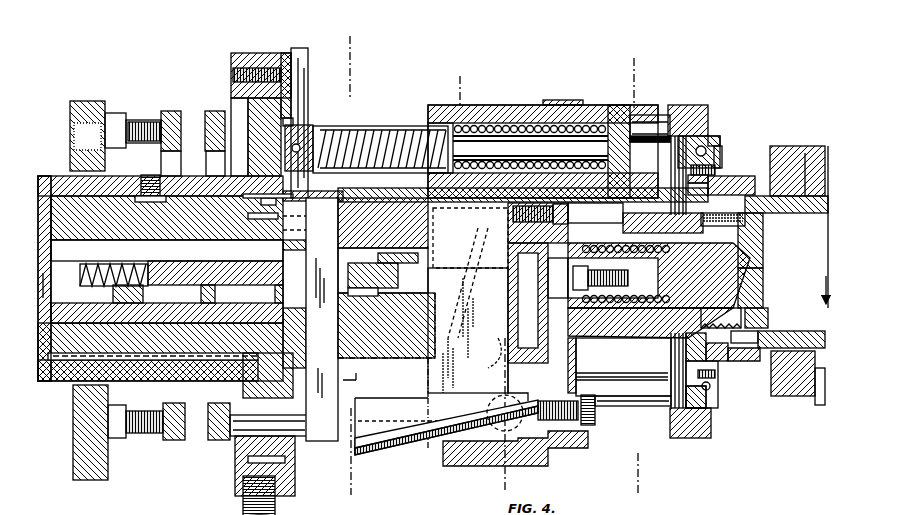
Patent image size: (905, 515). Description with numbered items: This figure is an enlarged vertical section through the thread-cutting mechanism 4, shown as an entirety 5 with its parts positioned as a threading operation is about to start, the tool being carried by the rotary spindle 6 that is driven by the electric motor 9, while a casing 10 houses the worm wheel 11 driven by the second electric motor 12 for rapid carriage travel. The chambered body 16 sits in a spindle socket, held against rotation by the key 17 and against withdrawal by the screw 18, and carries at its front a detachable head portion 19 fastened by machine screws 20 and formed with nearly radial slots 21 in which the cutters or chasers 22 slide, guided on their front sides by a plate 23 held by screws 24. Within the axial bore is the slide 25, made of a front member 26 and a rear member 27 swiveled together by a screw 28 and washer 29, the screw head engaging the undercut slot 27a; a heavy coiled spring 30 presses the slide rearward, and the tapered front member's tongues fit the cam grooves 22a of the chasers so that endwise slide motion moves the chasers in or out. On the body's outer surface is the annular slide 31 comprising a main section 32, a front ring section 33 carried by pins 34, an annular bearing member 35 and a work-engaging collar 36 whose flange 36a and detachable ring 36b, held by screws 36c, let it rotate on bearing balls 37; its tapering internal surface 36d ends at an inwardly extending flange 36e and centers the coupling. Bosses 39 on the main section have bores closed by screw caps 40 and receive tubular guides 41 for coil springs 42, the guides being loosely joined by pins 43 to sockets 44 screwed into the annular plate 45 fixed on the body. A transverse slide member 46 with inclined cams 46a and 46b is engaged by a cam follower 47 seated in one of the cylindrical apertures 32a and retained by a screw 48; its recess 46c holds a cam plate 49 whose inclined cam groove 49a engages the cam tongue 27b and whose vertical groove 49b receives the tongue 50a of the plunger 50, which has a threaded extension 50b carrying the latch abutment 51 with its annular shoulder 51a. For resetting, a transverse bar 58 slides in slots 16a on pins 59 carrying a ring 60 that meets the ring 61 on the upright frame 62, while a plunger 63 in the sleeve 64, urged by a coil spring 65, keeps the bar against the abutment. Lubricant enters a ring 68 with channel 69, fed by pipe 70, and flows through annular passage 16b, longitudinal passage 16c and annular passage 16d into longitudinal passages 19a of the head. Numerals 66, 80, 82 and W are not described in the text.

The thread-cutting mechanism 4 is at (638, 460).
The section line 5 is at (432, 298).
The rotary spindle 6 is at (40, 168).
The electric motor 9 is at (626, 50).
The casing 10 is at (452, 68).
The worm wheel 11 is at (340, 28).
The electric motor 12 is at (345, 170).
The chambered body 16 is at (130, 373).
The slots 16a is at (262, 340).
The annular passage 16b is at (252, 192).
The longitudinal passage 16c is at (252, 210).
The annular passage 16d is at (561, 360).
The key 17 is at (65, 400).
The screw 18 is at (140, 167).
The head portion 19 is at (640, 330).
The longitudinal passages 19a is at (622, 210).
The machine screws 20 is at (562, 206).
The radial slots 21 is at (645, 205).
The cutter or chaser 22 is at (750, 207).
The cam grooves 22a is at (721, 298).
The plate 23 is at (742, 282).
The screws 24 is at (742, 240).
The slide 25 is at (600, 328).
The front member 26 is at (742, 250).
The rear member 27 is at (540, 270).
The undercut slot 27a is at (558, 278).
The cam tongue 27b is at (471, 272).
The screw 28 is at (613, 278).
The washer 29 is at (612, 330).
The coiled spring 30 is at (626, 274).
The annular slide 31 is at (491, 90).
The main section 32 is at (558, 92).
The cylindrical apertures 32a is at (548, 442).
The front ring section 33 is at (695, 97).
The pins 34 is at (640, 107).
The annular bearing member 35 is at (700, 128).
The work-engaging collar 36 is at (716, 180).
The flange 36a is at (712, 135).
The detachable ring 36b is at (678, 128).
The screws 36c is at (683, 160).
The tapering internal surface 36d is at (720, 388).
The inwardly extending flange 36e is at (708, 380).
The bearing balls 37 is at (714, 150).
The bosses 39 is at (525, 97).
The screw caps 40 is at (608, 97).
The tubular guides 41 is at (372, 118).
The coil springs 42 is at (400, 118).
The pins 43 is at (293, 118).
The sockets 44 is at (283, 110).
The annular plate 45 is at (288, 42).
The transverse slide member 46 is at (490, 371).
The inclined cam 46a is at (398, 416).
The inclined cam 46b is at (392, 444).
The recess 46c is at (458, 360).
The cam follower 47 is at (505, 432).
The screw 48 is at (588, 420).
The cam plate 49 is at (423, 358).
The inclined cam groove 49a is at (489, 343).
The vertical groove 49b is at (386, 325).
The plunger 50 is at (398, 240).
The tongue 50a is at (470, 237).
The threaded extension 50b is at (400, 275).
The latch abutment 51 is at (378, 250).
The annular shoulder 51a is at (366, 307).
The transverse bar 58 is at (322, 319).
The pins 59 is at (240, 428).
The ring 60 is at (207, 103).
The ring 61 is at (165, 103).
The upright frame 62 is at (78, 93).
The plunger 63 is at (207, 300).
The sleeve 64 is at (170, 300).
The coil spring 65 is at (90, 300).
The block 66 is at (383, 222).
The ring 68 is at (224, 50).
The annular channel 69 is at (278, 90).
The pipe 70 is at (235, 497).
The block 80 is at (790, 388).
The block 82 is at (778, 150).
The workpiece W is at (798, 150).